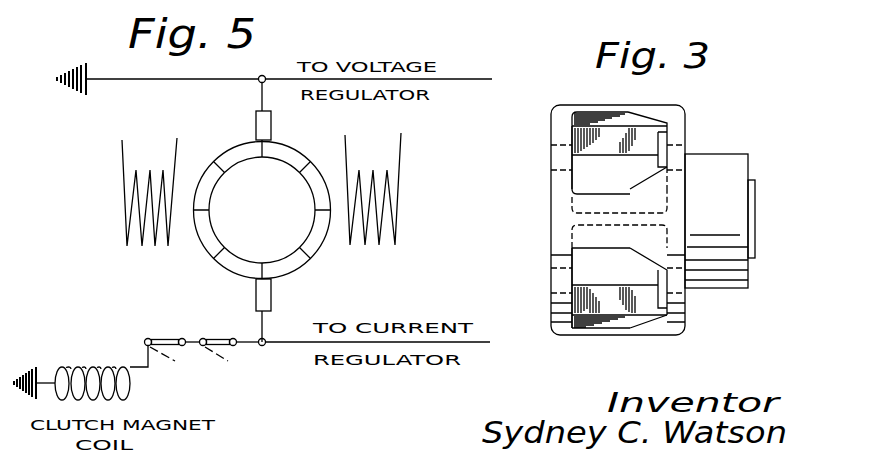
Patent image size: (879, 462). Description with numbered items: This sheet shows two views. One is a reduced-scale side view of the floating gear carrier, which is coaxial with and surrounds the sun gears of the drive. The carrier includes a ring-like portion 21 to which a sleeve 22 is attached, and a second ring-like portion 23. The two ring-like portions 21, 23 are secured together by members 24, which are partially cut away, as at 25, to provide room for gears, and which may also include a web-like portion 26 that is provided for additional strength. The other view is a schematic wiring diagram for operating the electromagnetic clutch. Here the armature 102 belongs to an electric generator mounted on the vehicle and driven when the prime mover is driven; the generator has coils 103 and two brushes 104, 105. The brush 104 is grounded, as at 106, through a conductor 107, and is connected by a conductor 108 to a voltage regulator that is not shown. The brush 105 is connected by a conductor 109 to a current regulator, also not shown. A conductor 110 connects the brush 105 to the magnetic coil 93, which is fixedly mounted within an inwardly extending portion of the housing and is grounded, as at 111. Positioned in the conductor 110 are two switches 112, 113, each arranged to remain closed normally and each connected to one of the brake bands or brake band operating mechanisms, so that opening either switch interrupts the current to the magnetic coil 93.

In FIG. 3, the ring-like portion 21 is at (677, 120).
In FIG. 3, the sleeve 22 is at (724, 165).
In FIG. 3, the ring-like portion 23 is at (555, 210).
In FIG. 3, the members 24 is at (648, 110).
In FIG. 3, the cut-away 25 is at (590, 117).
In FIG. 3, the web-like portion 26 is at (626, 147).
In FIG. 5, the magnetic coil 93 is at (86, 364).
In FIG. 5, the armature 102 is at (295, 233).
In FIG. 5, the coils 103 is at (118, 217).
In FIG. 5, the brush 104 is at (272, 125).
In FIG. 5, the brush 105 is at (272, 294).
In FIG. 5, the ground 106 is at (68, 95).
In FIG. 5, the conductor 107 is at (150, 82).
In FIG. 5, the conductor 108 is at (465, 80).
In FIG. 5, the conductor 109 is at (299, 346).
In FIG. 5, the conductor 110 is at (150, 368).
In FIG. 5, the ground 111 is at (29, 367).
In FIG. 5, the switch 112 is at (218, 338).
In FIG. 5, the switch 113 is at (163, 338).